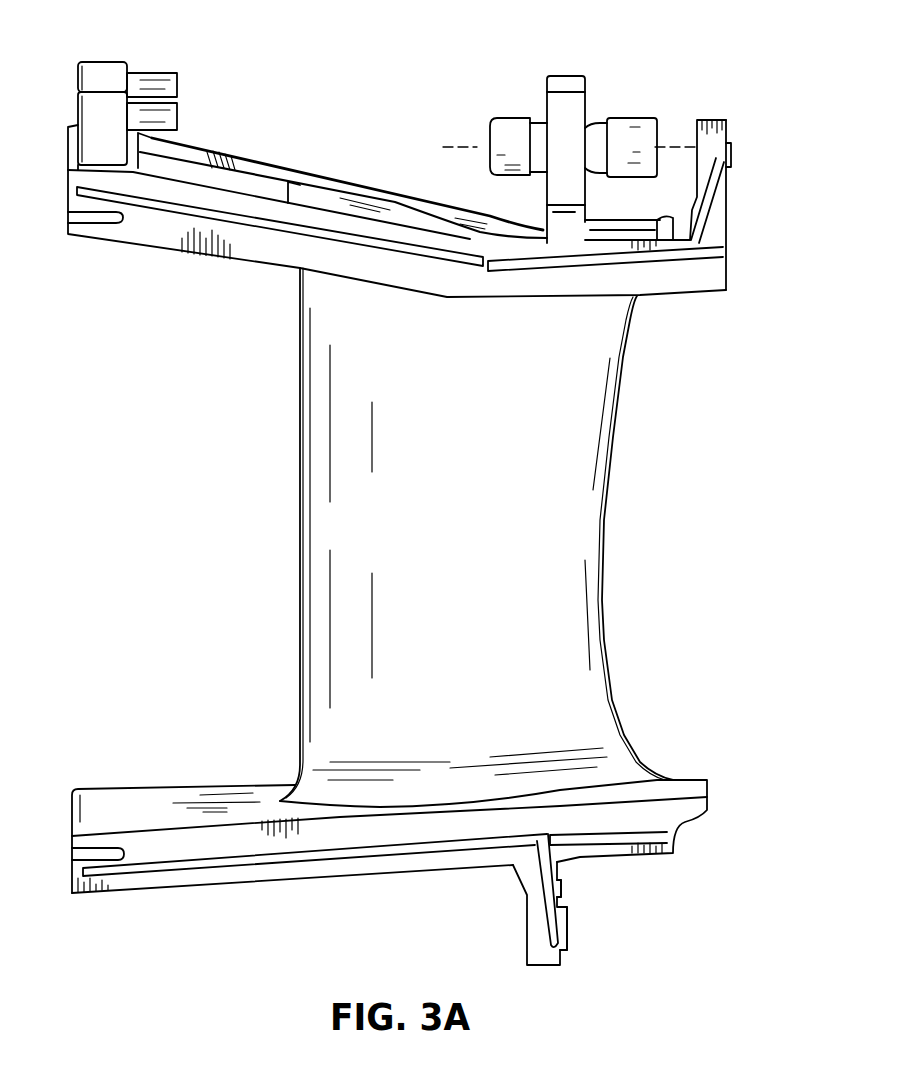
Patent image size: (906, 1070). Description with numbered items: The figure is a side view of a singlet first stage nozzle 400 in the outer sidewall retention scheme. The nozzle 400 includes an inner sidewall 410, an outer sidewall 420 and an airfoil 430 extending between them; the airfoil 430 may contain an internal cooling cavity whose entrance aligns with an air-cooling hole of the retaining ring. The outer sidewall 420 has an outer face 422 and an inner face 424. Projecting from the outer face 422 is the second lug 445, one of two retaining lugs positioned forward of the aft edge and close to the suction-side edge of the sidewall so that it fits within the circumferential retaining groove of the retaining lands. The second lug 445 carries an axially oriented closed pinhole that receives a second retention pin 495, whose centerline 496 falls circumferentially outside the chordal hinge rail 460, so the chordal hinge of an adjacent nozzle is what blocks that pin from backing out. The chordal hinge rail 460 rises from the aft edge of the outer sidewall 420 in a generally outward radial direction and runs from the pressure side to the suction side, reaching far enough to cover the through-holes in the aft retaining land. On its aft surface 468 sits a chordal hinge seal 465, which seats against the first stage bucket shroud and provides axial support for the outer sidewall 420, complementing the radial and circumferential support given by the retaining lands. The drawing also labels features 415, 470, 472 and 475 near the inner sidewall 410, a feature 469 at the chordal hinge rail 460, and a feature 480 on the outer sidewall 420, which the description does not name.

The first stage nozzle 400 is at (819, 247).
The inner sidewall 410 is at (727, 786).
The inner platform rail 415 is at (202, 896).
The outer sidewall 420 is at (362, 164).
The outer face 422 is at (249, 168).
The inner face 424 is at (220, 254).
The airfoil 430 is at (603, 549).
The second lug 445 is at (565, 76).
The chordal hinge rail 460 is at (742, 254).
The chordal hinge seal 465 is at (731, 158).
The aft surface 468 is at (728, 207).
The rail post 469 is at (695, 134).
The inner platform hanger 470 is at (510, 920).
The hanger notch 472 is at (563, 888).
The hanger step 475 is at (569, 931).
The outer platform boss 480 is at (90, 72).
The second retention pin 495 is at (625, 117).
The centerline 496 is at (676, 146).